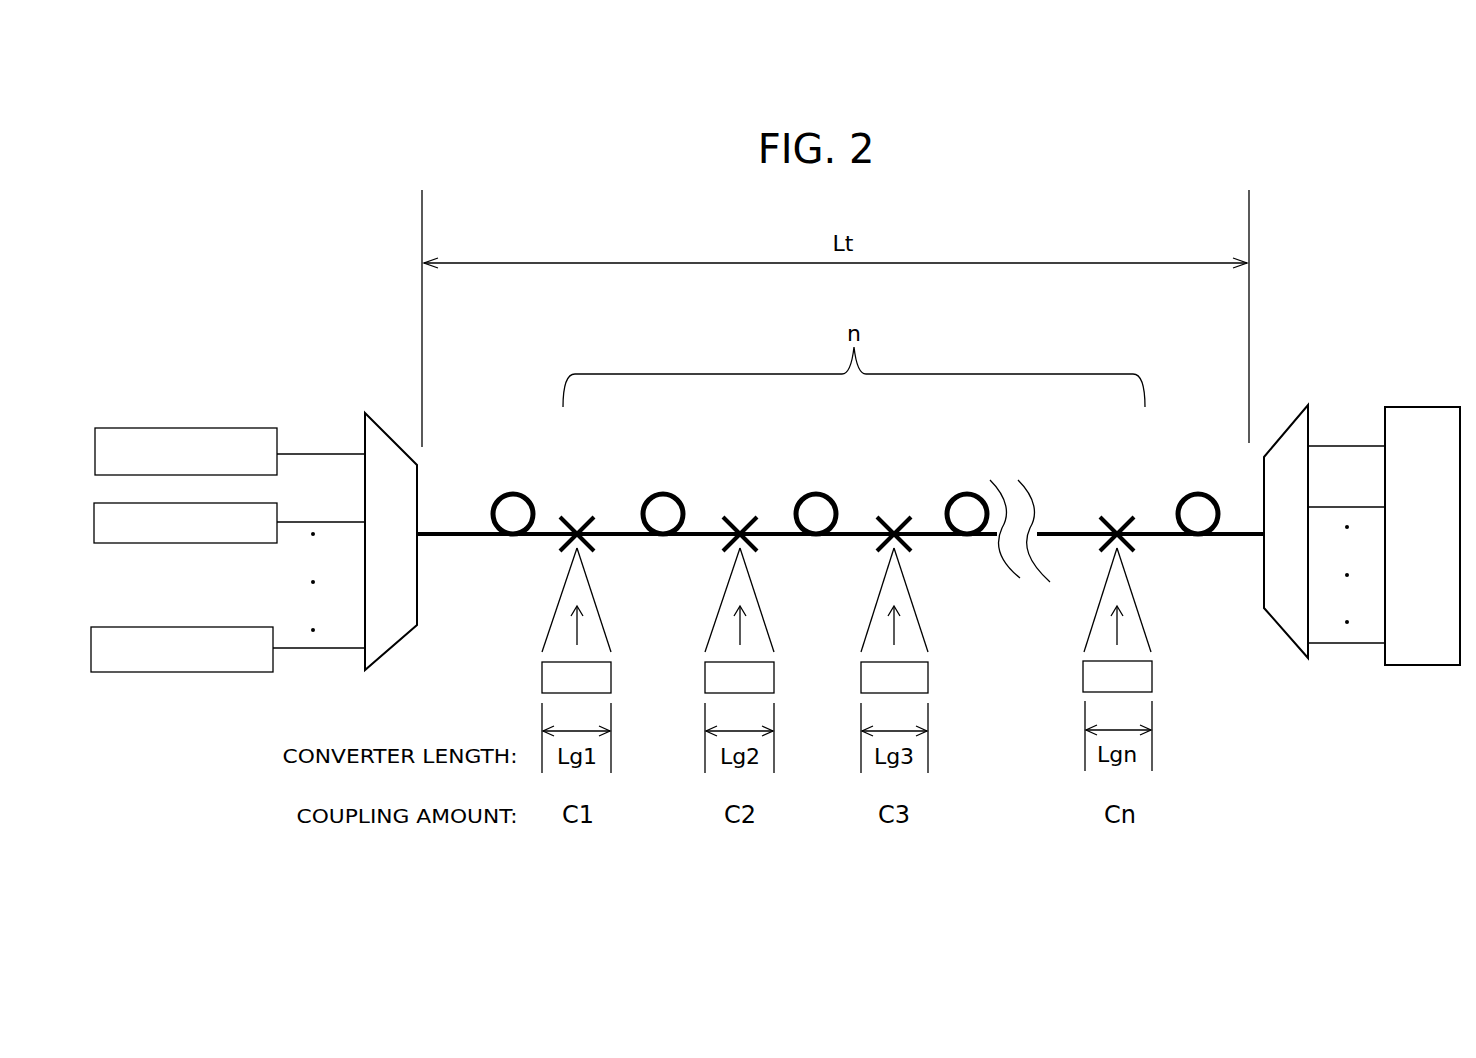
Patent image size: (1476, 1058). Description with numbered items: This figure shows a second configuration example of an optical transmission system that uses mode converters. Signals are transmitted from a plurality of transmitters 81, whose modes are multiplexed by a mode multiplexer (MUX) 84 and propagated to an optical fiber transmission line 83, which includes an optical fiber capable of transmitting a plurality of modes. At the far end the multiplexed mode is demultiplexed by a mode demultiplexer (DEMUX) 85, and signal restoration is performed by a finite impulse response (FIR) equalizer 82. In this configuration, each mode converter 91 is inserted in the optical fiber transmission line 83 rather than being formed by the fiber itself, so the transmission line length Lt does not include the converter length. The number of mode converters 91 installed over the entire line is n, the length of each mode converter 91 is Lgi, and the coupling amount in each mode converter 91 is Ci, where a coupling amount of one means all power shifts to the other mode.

The transmitter 81 is at (262, 428).
The finite impulse response (FIR) equalizer 82 is at (1425, 407).
The optical fiber transmission line 83 is at (516, 493).
The mode multiplexer (MUX) 84 is at (383, 428).
The mode demultiplexer (DEMUX) 85 is at (1290, 425).
The mode converter 91 is at (611, 672).